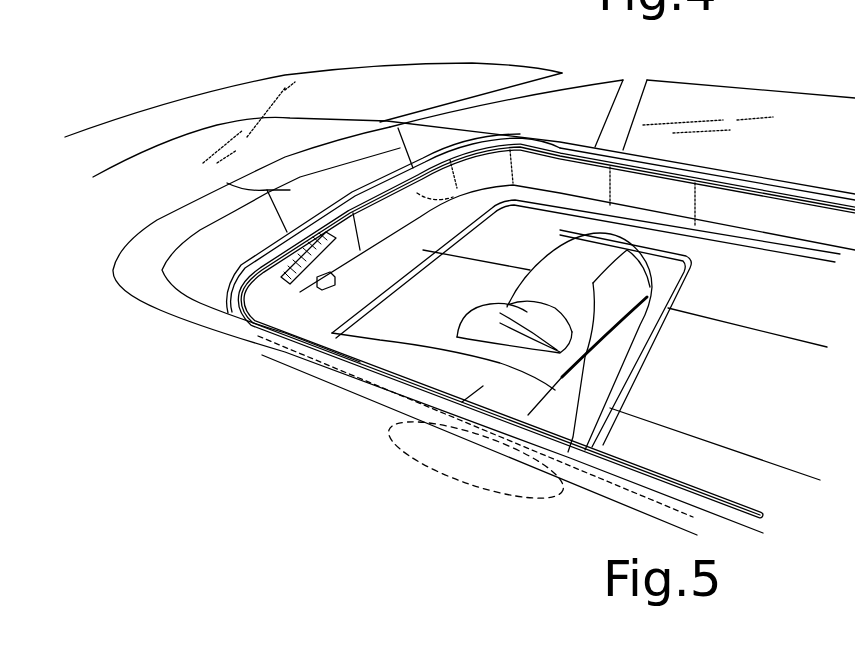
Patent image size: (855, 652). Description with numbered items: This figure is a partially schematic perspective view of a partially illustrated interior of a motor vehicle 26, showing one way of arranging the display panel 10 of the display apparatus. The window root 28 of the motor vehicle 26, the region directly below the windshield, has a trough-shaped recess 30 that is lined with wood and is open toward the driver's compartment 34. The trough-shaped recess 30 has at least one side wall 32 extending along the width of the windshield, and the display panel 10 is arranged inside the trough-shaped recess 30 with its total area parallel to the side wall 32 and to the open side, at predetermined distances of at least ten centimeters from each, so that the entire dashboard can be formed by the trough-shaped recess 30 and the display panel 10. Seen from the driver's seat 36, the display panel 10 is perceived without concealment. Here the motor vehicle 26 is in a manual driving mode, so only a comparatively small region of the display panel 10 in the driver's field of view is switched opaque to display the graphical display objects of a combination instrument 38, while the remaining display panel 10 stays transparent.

The display panel 10 is at (404, 206).
The motor vehicle 26 is at (341, 95).
The window root 28 is at (165, 253).
The trough-shaped recess 30 is at (222, 299).
The side wall 32 is at (290, 190).
The driver's compartment 34 is at (414, 324).
The driver's seat 36 is at (480, 387).
The combination instrument 38 is at (260, 318).